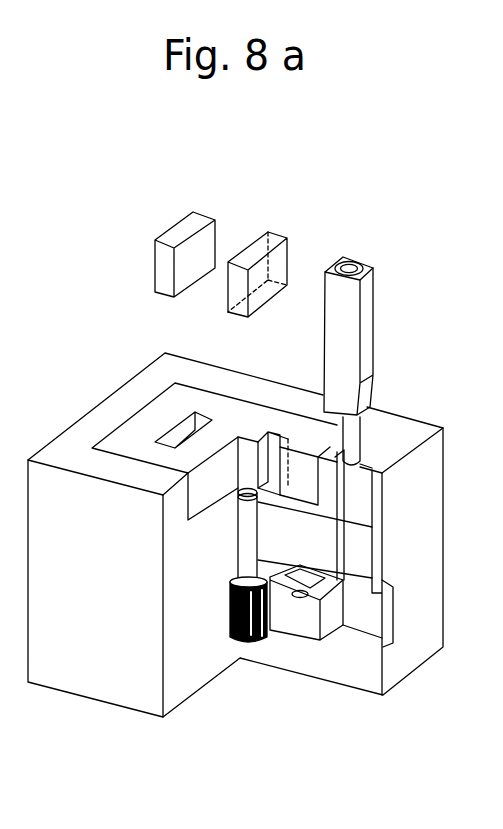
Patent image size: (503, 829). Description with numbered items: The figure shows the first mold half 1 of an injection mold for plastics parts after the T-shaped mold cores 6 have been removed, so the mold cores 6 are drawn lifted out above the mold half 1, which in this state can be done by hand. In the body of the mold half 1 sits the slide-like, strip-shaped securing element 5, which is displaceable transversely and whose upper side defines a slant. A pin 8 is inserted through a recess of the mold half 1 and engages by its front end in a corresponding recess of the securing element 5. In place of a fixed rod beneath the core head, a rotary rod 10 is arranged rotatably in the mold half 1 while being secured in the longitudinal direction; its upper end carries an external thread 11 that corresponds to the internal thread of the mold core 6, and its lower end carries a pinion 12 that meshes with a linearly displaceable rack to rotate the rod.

The first mold half 1 is at (108, 675).
The slide-like, strip-shaped securing element 5 is at (330, 612).
The T-shaped mold core 6 is at (202, 248).
The pin 8 is at (345, 332).
The rotary rod 10 is at (258, 545).
The external thread 11 is at (257, 492).
The pinion 12 is at (256, 642).